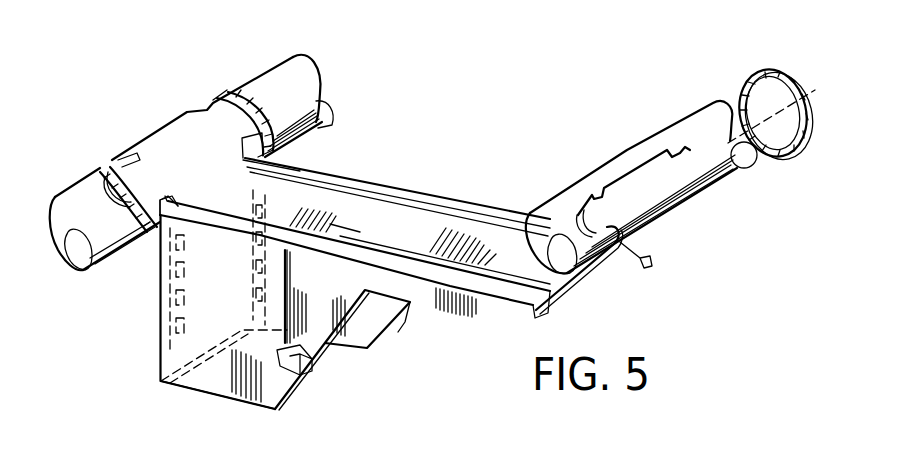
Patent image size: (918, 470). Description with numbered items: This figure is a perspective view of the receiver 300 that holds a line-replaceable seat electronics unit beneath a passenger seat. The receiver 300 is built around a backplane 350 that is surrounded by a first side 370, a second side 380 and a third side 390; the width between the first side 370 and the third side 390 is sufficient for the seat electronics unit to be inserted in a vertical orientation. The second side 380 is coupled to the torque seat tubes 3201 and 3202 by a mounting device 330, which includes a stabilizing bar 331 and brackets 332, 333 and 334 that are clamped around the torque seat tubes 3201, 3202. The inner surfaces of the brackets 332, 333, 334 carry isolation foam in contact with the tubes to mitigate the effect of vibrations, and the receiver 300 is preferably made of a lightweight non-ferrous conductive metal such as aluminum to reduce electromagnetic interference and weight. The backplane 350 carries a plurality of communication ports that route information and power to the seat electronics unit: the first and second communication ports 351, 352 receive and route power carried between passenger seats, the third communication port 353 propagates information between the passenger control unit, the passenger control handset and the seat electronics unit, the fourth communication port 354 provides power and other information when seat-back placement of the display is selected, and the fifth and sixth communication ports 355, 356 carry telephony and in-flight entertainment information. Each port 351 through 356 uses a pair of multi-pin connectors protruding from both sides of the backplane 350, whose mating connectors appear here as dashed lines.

The receiver 300 is at (221, 377).
The torque seat tube 3201 is at (303, 73).
The torque seat tube 3202 is at (683, 130).
The mounting device 330 is at (362, 202).
The stabilizing bar 331 is at (387, 203).
The bracket 332 is at (103, 172).
The bracket 333 is at (219, 96).
The bracket 334 is at (763, 70).
The backplane 350 is at (158, 358).
The first communication port 351 is at (157, 237).
The second communication port 352 is at (158, 300).
The third communication port 353 is at (161, 330).
The fourth communication port 354 is at (293, 166).
The fifth communication port 355 is at (338, 229).
The sixth communication port 356 is at (292, 274).
The first side 370 is at (327, 321).
The second side 380 is at (447, 195).
The third side 390 is at (383, 331).